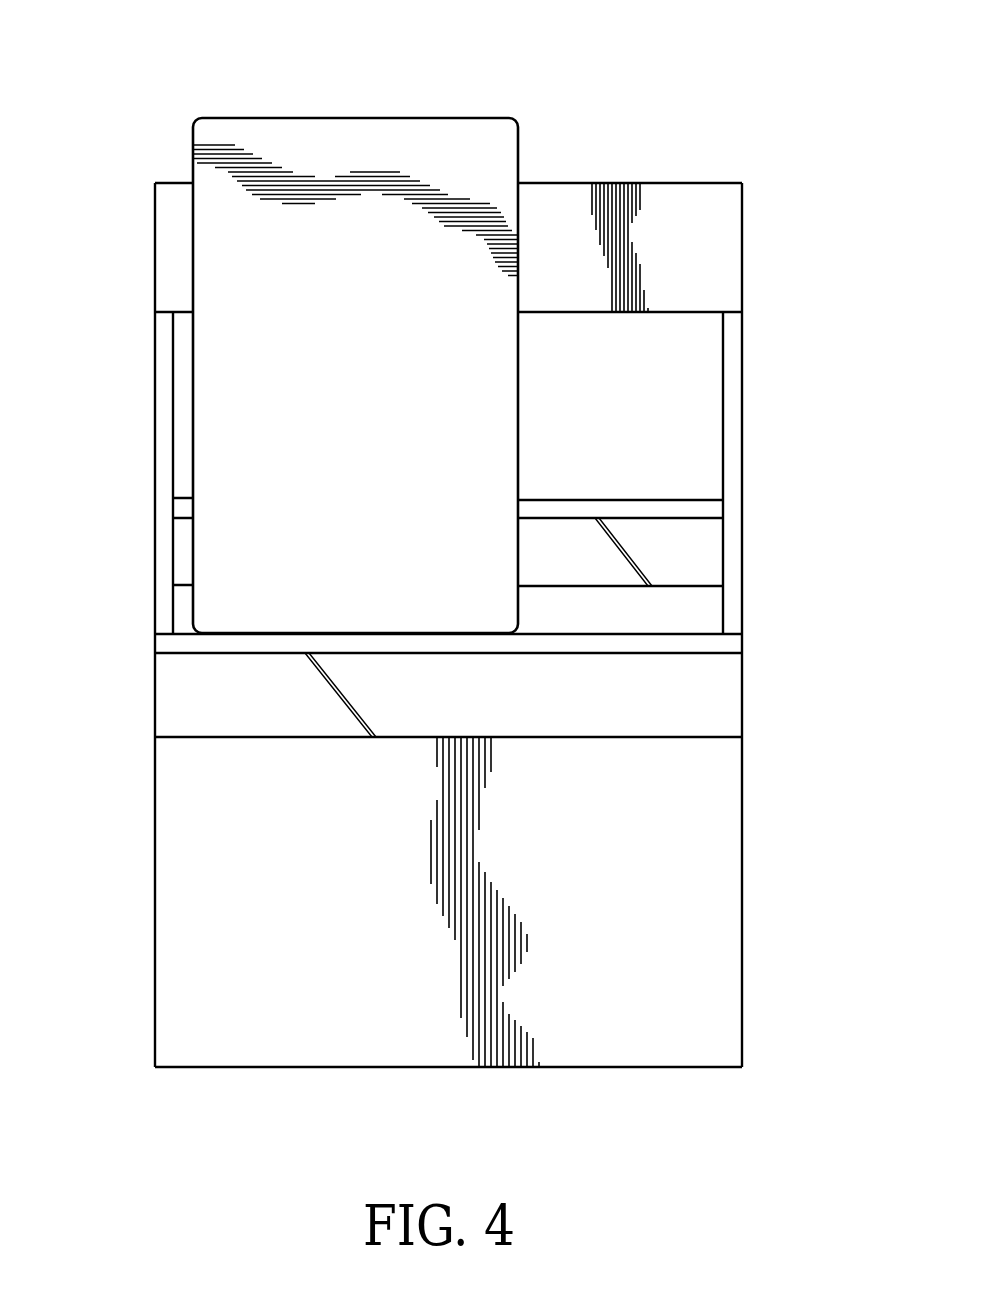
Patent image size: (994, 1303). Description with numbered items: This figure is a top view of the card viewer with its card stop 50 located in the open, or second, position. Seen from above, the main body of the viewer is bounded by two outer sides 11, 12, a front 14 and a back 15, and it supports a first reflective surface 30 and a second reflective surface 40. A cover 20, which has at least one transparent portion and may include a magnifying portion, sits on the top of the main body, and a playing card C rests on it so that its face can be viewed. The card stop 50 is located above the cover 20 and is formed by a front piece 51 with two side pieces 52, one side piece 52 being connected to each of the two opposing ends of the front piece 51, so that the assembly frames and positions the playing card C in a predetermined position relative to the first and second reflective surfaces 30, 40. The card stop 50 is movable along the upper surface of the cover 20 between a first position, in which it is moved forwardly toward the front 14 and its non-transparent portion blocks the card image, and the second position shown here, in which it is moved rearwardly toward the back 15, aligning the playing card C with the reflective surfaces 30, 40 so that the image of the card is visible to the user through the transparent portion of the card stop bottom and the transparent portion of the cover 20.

The playing card C is at (387, 118).
The outer side 11 is at (155, 890).
The outer side 12 is at (742, 878).
The front 14 is at (240, 1067).
The back 15 is at (633, 183).
The cover 20 is at (178, 795).
The first reflective surface 30 is at (707, 537).
The second reflective surface 40 is at (718, 703).
The card stop 50 is at (745, 573).
The front piece 51 is at (717, 645).
The side pieces 52 is at (167, 362).